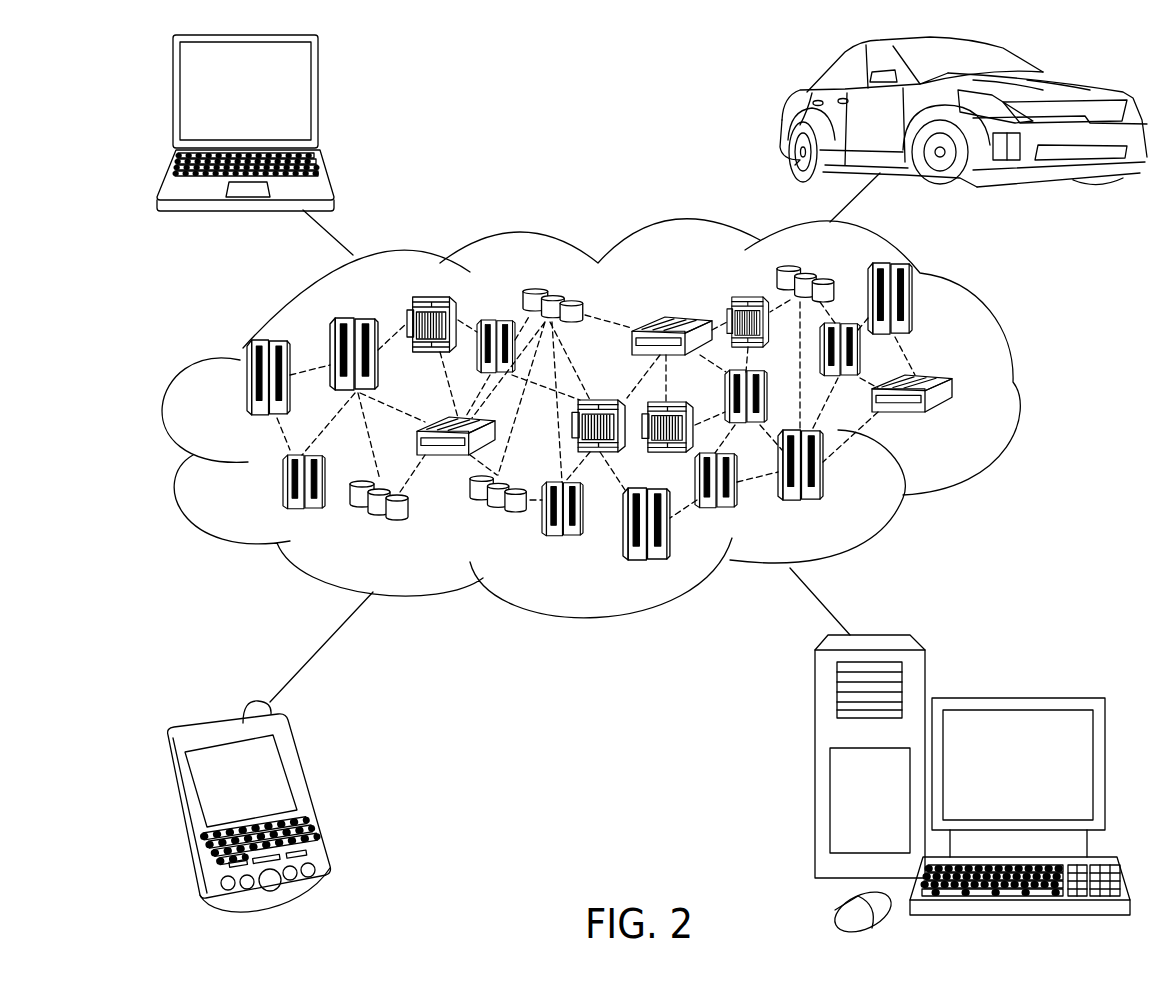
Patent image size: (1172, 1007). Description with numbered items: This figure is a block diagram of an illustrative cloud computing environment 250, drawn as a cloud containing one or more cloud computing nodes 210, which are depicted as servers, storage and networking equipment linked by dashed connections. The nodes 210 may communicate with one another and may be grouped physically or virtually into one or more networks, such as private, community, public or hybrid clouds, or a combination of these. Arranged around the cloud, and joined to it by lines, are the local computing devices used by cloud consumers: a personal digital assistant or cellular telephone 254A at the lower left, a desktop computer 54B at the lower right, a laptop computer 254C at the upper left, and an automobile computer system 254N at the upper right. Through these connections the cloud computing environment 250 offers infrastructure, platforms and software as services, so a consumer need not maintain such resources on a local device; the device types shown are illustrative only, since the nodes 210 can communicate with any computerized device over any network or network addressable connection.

The laptop computer 254C is at (319, 101).
The automobile computer system 254N is at (781, 118).
The cloud computing environment 250 is at (1015, 391).
The cloud computing node 210 is at (953, 423).
The personal digital assistant (PDA) or cellular telephone 254A is at (309, 797).
The desktop computer 54B is at (1015, 697).